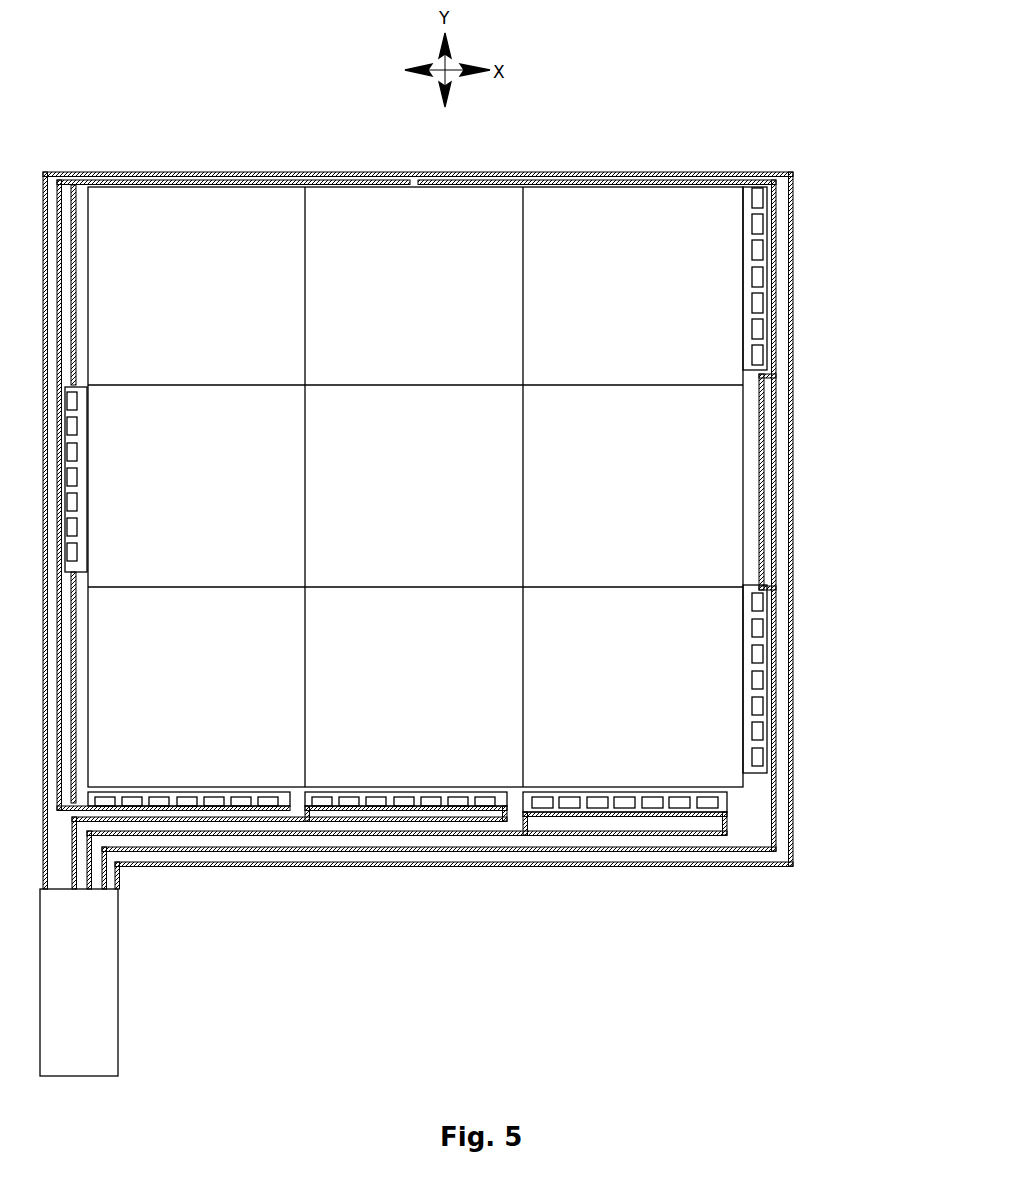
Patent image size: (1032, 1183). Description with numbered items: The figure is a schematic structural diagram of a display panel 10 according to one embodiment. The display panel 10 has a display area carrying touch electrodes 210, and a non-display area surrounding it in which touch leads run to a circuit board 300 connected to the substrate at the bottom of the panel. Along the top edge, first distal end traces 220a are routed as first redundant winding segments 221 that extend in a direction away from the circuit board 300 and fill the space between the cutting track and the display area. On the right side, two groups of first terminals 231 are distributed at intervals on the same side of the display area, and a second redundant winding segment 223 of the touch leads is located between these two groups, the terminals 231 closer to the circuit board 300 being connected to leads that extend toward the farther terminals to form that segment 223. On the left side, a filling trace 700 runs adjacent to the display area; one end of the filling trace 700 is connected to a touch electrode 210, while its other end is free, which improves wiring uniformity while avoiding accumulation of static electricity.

The display panel 10 is at (298, 82).
The touch electrodes 210 is at (123, 191).
The first distal end trace 220a is at (485, 459).
The first redundant winding segment 221 is at (300, 182).
The first terminals 231 is at (760, 258).
The second redundant winding segment 223 is at (763, 500).
The filling trace 700 is at (78, 298).
The circuit board 300 is at (108, 970).